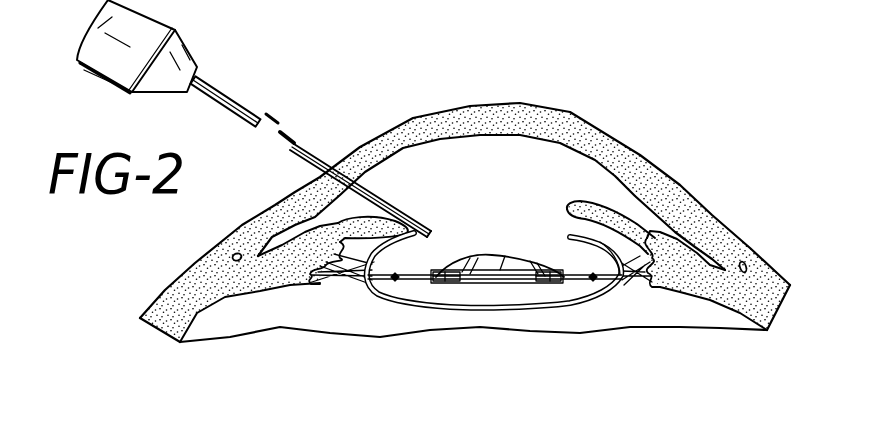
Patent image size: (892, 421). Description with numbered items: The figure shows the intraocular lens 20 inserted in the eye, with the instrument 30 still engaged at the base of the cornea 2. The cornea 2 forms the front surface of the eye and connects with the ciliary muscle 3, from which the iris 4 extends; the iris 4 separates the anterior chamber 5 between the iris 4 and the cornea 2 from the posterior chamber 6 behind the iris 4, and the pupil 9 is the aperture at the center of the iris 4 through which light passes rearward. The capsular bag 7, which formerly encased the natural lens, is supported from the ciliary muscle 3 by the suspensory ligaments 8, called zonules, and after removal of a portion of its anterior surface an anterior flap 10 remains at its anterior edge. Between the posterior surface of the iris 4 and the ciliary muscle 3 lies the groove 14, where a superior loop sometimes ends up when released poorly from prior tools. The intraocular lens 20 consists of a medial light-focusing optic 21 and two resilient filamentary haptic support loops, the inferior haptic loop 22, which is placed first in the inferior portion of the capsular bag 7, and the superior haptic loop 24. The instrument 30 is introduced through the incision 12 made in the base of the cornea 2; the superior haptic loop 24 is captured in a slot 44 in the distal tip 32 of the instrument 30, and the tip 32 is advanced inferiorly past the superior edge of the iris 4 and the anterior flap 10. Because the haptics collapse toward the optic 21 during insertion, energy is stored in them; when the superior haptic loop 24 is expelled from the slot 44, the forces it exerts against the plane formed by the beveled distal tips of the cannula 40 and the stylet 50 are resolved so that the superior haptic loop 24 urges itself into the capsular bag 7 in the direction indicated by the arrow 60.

The cornea 2 is at (533, 107).
The ciliary muscle 3 is at (743, 297).
The iris 4 is at (587, 207).
The anterior chamber 5 is at (457, 150).
The posterior chamber 6 is at (305, 312).
The capsular bag 7 is at (548, 290).
The suspensory ligaments 8 is at (335, 285).
The pupil 9 is at (553, 190).
The anterior flap 10 is at (643, 207).
The incision 12 is at (333, 160).
The groove 14 is at (316, 220).
The intraocular lens 20 is at (505, 260).
The optic 21 is at (495, 284).
The inferior haptic loop 22 is at (601, 280).
The superior haptic loop 24 is at (412, 281).
The instrument 30 is at (200, 38).
The distal tip 32 is at (436, 236).
The cannula 40 is at (383, 193).
The slot 44 is at (417, 227).
The stylet 50 is at (285, 140).
The arrow 60 is at (411, 263).